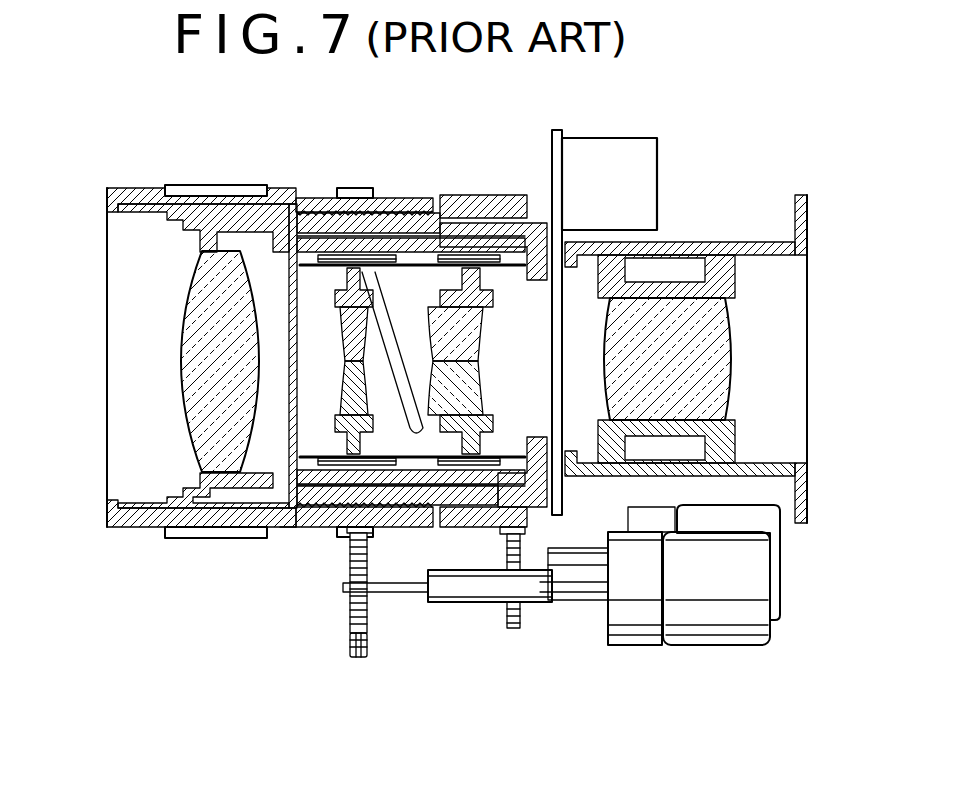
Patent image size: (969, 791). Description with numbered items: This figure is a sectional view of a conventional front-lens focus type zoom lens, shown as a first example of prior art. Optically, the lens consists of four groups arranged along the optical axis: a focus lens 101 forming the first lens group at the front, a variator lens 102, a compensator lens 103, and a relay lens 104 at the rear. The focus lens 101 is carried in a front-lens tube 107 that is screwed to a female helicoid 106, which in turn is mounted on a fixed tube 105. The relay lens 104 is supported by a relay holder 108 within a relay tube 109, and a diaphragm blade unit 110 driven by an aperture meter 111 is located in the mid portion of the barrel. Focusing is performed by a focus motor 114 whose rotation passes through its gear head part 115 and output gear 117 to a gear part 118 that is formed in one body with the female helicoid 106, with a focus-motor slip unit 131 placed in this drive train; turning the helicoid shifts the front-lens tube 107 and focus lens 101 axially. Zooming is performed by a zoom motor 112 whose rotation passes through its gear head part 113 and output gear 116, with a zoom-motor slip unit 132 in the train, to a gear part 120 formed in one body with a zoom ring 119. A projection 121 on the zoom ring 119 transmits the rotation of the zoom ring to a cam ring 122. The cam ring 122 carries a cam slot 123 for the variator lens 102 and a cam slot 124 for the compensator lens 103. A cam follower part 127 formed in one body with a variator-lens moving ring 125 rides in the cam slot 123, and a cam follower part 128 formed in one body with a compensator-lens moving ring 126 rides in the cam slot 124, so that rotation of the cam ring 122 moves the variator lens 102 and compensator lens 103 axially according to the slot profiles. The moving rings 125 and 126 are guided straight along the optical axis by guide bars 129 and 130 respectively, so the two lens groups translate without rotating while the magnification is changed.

The focus lens 101 is at (205, 357).
The variator lens 102 is at (352, 327).
The compensator lens 103 is at (485, 320).
The relay lens 104 is at (680, 333).
The fixed tube 105 is at (452, 230).
The female helicoid 106 is at (283, 195).
The front-lens tube 107 is at (199, 186).
The relay holder 108 is at (685, 245).
The relay tube 109 is at (722, 270).
The diaphragm blade unit 110 is at (557, 230).
The aperture meter 111 is at (617, 195).
The zoom motor 112 is at (760, 523).
The gear head part 113 is at (650, 506).
The focus motor 114 is at (706, 612).
The gear head part 115 is at (635, 610).
The output gear 116 is at (512, 632).
The output gear 117 is at (358, 660).
The gear part 118 is at (373, 533).
The zoom ring 119 is at (458, 520).
The gear part 120 is at (477, 603).
The projection 121 is at (543, 603).
The cam ring 122 is at (340, 510).
The cam slot 123 is at (372, 332).
The cam slot 124 is at (472, 342).
The variator-lens moving ring 125 is at (386, 222).
The compensator-lens moving ring 126 is at (493, 230).
The cam follower part 127 is at (345, 190).
The cam follower part 128 is at (463, 205).
The guide bar 129 is at (292, 530).
The guide bar 130 is at (400, 256).
The focus-motor slip unit 131 is at (495, 603).
The zoom-motor slip unit 132 is at (597, 602).